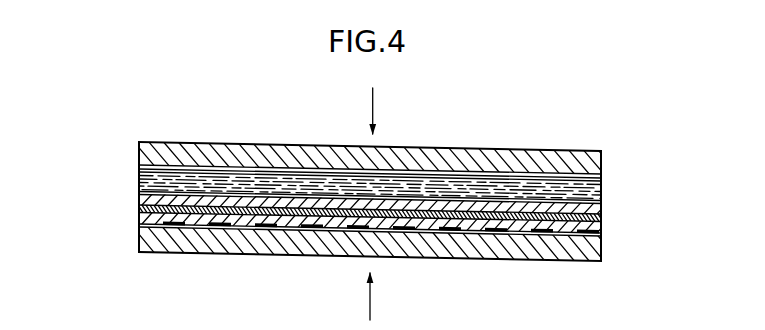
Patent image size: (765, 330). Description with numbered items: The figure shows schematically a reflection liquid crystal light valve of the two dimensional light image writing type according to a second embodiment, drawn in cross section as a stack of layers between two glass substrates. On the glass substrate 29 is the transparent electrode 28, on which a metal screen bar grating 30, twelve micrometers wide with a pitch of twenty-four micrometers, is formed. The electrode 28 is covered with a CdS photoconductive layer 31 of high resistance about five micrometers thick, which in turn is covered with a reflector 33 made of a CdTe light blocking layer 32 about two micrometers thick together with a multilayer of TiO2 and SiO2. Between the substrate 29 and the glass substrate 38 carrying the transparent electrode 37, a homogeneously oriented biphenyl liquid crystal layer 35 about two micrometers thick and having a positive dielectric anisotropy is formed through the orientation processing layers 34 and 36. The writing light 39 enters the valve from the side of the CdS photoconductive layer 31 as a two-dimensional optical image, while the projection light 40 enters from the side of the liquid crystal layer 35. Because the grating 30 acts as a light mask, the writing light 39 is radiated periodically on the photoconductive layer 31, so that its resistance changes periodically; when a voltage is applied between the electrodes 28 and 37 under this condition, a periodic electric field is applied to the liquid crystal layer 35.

The transparent electrode 28 is at (516, 234).
The glass substrate 29 is at (478, 245).
The metal screen bar grating 30 is at (548, 233).
The CdS photoconductive layer 31 is at (570, 234).
The CdTe light blocking layer 32 is at (603, 246).
The reflector 33 is at (603, 228).
The orientation processing layer 34 is at (603, 218).
The liquid crystal layer 35 is at (603, 206).
The orientation processing layer 36 is at (603, 184).
The transparent electrode 37 is at (603, 161).
The glass substrate 38 is at (567, 156).
The writing light 39 is at (389, 296).
The projection light 40 is at (393, 109).